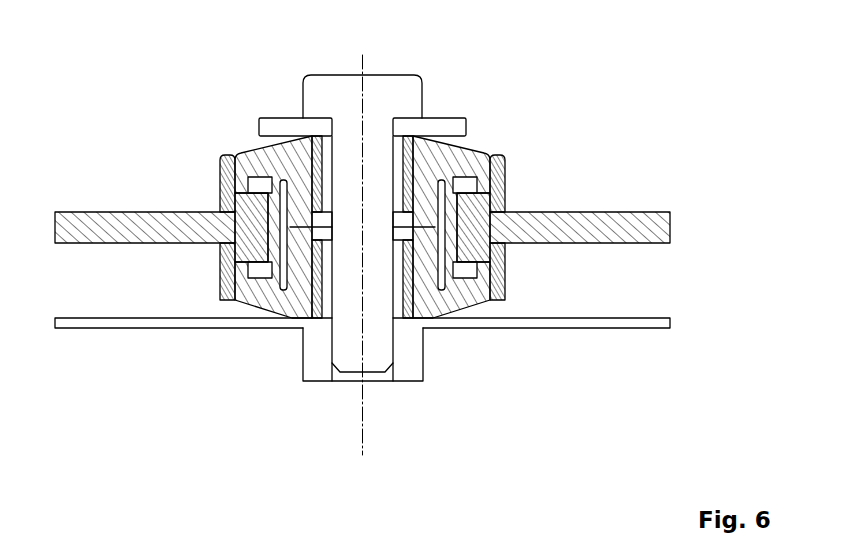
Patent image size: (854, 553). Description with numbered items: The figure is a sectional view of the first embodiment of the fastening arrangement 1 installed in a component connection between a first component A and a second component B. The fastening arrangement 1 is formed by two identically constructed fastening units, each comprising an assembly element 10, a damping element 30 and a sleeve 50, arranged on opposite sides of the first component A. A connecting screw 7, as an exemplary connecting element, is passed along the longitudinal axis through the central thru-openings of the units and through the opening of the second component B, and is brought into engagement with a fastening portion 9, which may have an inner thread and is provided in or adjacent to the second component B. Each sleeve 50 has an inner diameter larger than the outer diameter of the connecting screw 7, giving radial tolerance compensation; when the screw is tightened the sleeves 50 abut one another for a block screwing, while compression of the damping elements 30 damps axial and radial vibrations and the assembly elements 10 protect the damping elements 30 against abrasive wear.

The fastening arrangement 1 is at (663, 46).
The connecting screw 7 is at (405, 97).
The fastening portion 9 is at (413, 368).
The assembly element 10 is at (497, 200).
The damping element 30 is at (504, 166).
The sleeve 50 is at (413, 167).
The first component A is at (670, 227).
The second component B is at (653, 332).